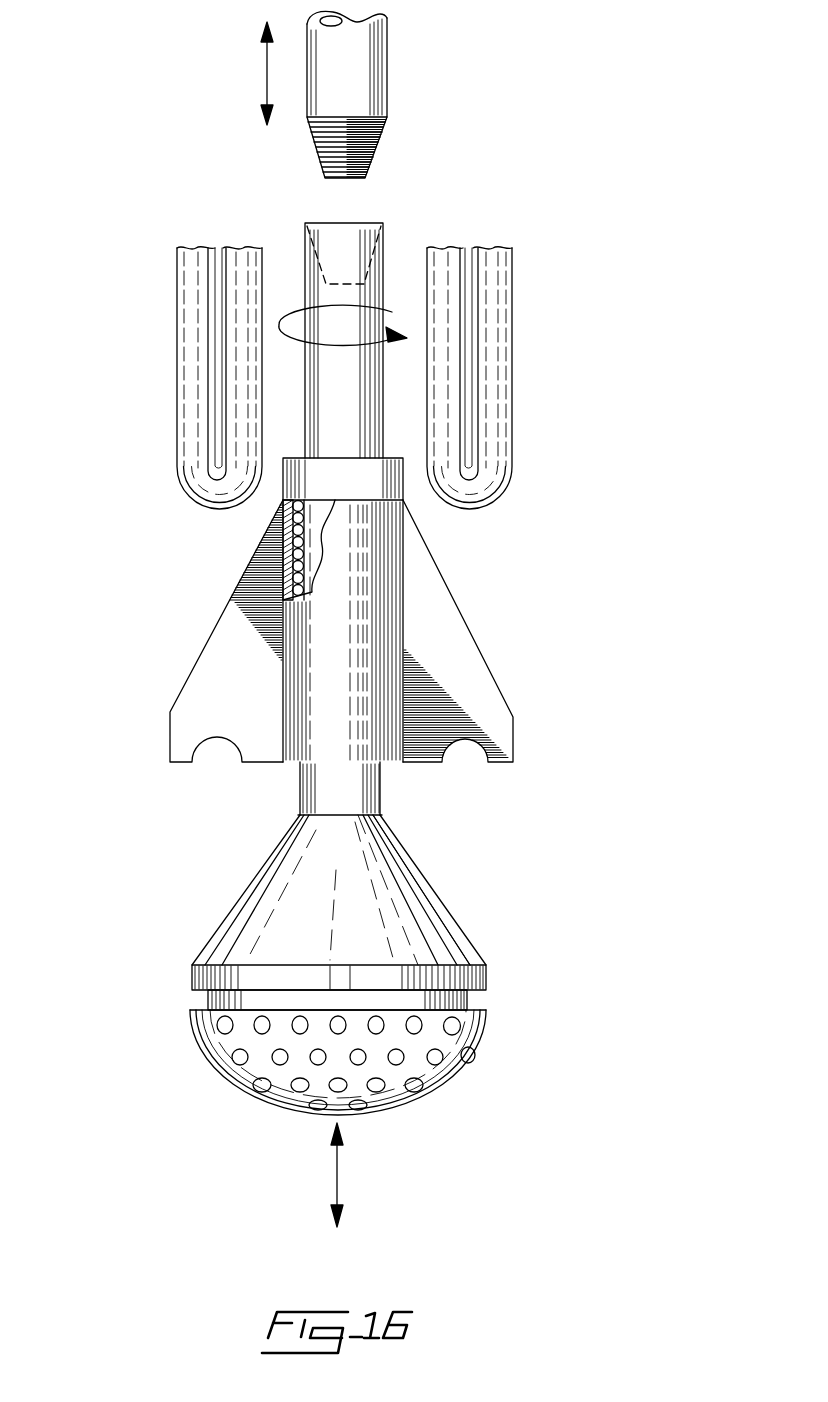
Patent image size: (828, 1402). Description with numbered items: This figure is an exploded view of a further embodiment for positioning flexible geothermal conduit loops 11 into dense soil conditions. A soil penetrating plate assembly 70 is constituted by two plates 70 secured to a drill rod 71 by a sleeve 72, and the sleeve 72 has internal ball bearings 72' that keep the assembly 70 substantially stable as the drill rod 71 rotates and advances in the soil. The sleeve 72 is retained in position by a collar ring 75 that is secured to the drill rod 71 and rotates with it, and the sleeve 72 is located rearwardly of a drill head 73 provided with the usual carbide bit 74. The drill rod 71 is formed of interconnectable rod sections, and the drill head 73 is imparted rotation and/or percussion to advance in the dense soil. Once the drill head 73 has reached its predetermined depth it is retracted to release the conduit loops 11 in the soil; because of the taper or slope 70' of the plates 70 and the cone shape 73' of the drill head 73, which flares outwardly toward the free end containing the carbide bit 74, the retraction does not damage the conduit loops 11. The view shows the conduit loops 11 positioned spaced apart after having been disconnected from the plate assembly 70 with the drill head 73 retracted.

The conduit loop 11 is at (193, 290).
The soil penetrating plate assembly 70 is at (359, 631).
The taper or slope of the plates 70' is at (225, 539).
The drill rod 71 is at (353, 62).
The sleeve 72 is at (310, 669).
The internal ball bearings 72' is at (218, 546).
The drill head 73 is at (374, 912).
The cone shape of the drill head 73' is at (480, 889).
The carbide bit 74 is at (460, 1043).
The collar ring 75 is at (403, 471).